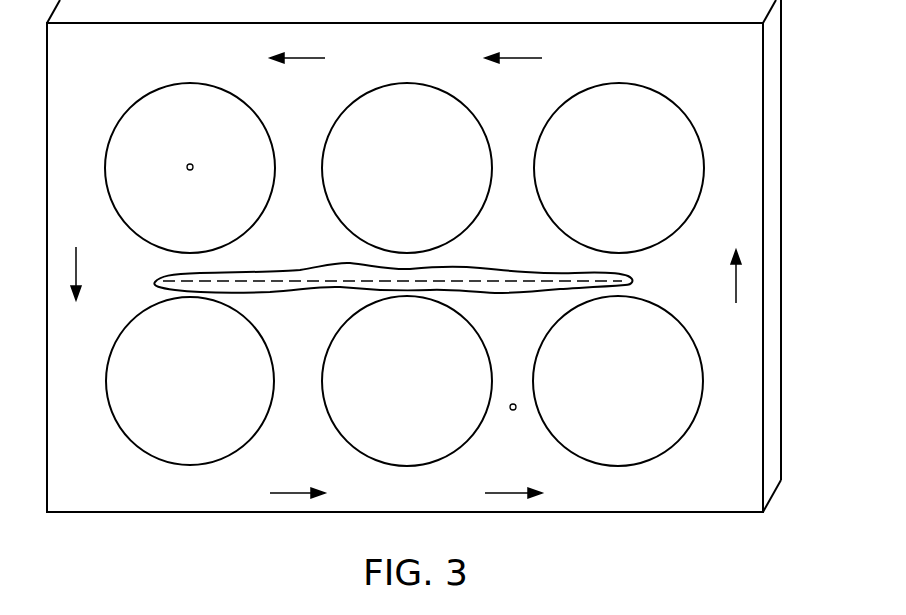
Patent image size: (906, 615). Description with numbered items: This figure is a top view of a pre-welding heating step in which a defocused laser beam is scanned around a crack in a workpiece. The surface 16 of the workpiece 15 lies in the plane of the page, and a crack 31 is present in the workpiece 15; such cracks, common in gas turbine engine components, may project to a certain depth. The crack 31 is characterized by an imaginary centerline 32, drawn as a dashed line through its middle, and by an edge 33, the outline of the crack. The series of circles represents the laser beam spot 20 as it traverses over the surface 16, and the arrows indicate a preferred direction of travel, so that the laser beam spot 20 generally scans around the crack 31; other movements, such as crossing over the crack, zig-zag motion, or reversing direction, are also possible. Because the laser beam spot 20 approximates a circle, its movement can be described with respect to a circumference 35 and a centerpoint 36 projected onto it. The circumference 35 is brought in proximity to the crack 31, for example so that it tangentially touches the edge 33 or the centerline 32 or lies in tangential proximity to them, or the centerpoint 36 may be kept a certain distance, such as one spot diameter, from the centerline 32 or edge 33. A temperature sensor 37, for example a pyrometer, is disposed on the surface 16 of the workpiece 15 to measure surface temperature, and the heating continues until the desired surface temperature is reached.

The workpiece 15 is at (776, 273).
The surface 16 is at (718, 68).
The laser beam spot 20 is at (126, 437).
The crack 31 is at (422, 259).
The centerline 32 is at (290, 280).
The edge 33 is at (497, 268).
The circumference 35 is at (190, 82).
The centerpoint 36 is at (193, 164).
The temperature sensor 37 is at (511, 412).